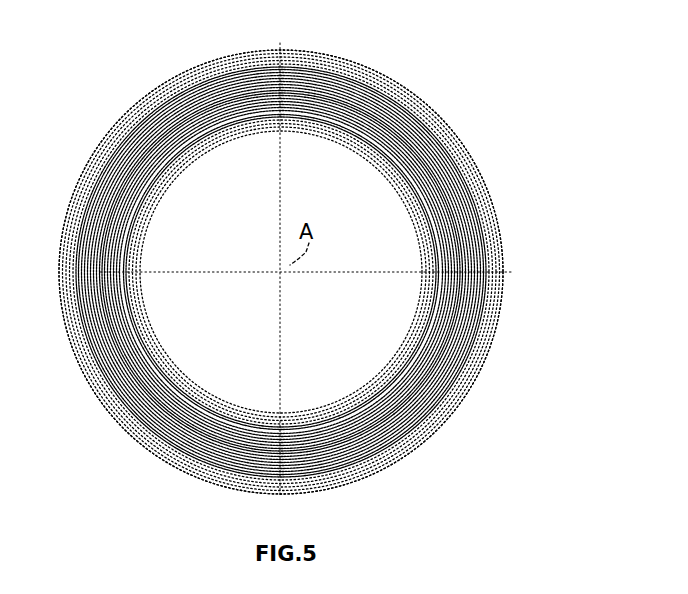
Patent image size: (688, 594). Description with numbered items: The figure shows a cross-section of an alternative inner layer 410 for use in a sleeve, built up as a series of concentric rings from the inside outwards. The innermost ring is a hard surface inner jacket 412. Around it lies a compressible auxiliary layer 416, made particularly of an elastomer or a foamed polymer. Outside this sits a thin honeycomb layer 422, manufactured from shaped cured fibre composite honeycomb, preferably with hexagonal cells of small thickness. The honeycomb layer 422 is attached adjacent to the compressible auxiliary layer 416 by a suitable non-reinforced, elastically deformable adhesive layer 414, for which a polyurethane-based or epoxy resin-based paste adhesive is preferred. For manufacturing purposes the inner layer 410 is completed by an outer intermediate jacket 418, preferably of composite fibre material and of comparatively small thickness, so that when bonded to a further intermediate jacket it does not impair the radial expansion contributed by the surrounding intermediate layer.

The inner layer 410 is at (480, 78).
The hard surface inner jacket 412 is at (178, 170).
The adhesive layer 414 is at (437, 293).
The compressible auxiliary layer 416 is at (440, 198).
The outer intermediate jacket 418 is at (427, 426).
The thin honeycomb layer 422 is at (465, 195).